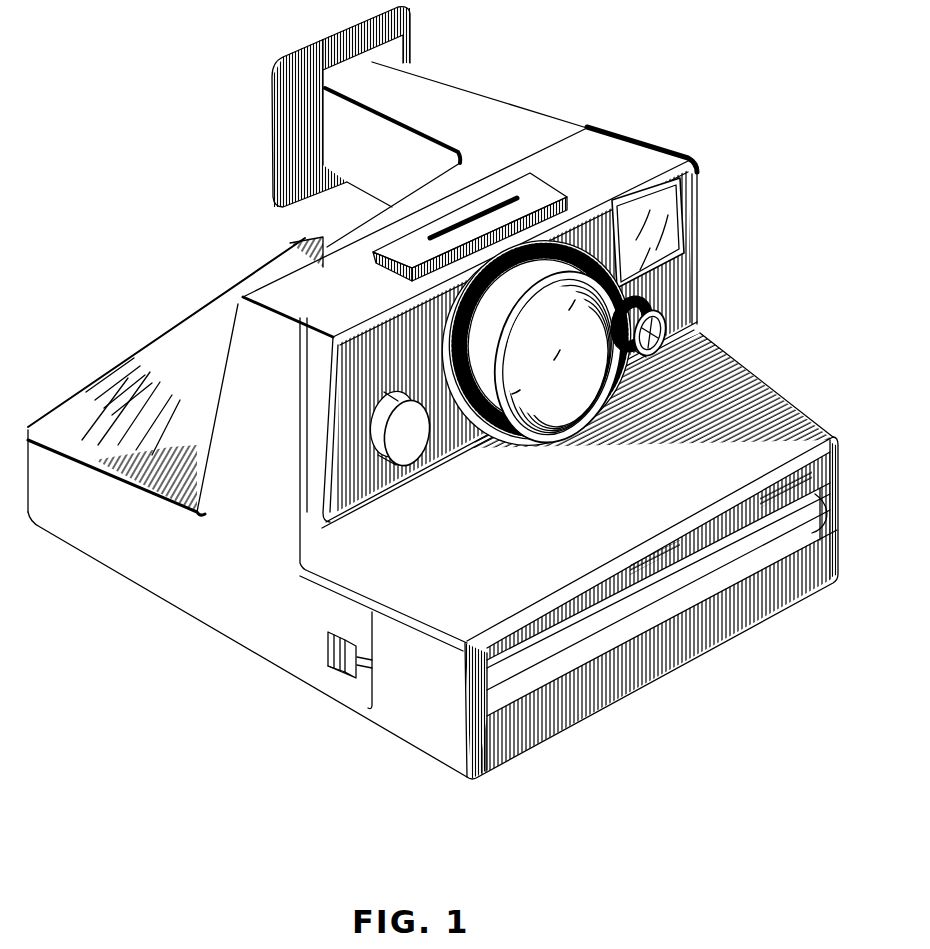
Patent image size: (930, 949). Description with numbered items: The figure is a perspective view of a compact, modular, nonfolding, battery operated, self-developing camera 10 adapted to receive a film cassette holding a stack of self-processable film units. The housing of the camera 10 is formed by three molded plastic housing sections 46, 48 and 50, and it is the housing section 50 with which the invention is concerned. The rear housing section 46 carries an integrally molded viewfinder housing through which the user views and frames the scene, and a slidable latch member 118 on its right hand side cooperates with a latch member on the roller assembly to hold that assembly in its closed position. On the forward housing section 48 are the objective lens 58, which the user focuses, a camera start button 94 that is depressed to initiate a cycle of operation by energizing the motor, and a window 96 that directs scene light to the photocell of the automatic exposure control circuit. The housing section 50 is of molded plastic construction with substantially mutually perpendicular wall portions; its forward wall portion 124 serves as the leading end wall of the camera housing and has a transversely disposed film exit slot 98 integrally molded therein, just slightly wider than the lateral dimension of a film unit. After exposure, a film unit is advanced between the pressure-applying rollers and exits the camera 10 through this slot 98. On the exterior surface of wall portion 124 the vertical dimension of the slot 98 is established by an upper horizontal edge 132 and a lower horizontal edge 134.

The camera 10 is at (608, 120).
The housing section 46 is at (236, 623).
The housing section 48 is at (766, 432).
The housing section 50 is at (406, 752).
The objective lens 58 is at (540, 384).
The camera start button 94 is at (400, 447).
The window 96 is at (670, 326).
The film exit slot 98 is at (568, 678).
The slidable latch member 118 is at (322, 686).
The forward wall portion 124 is at (505, 760).
The upper horizontal edge 132 is at (570, 633).
The lower horizontal edge 134 is at (627, 647).